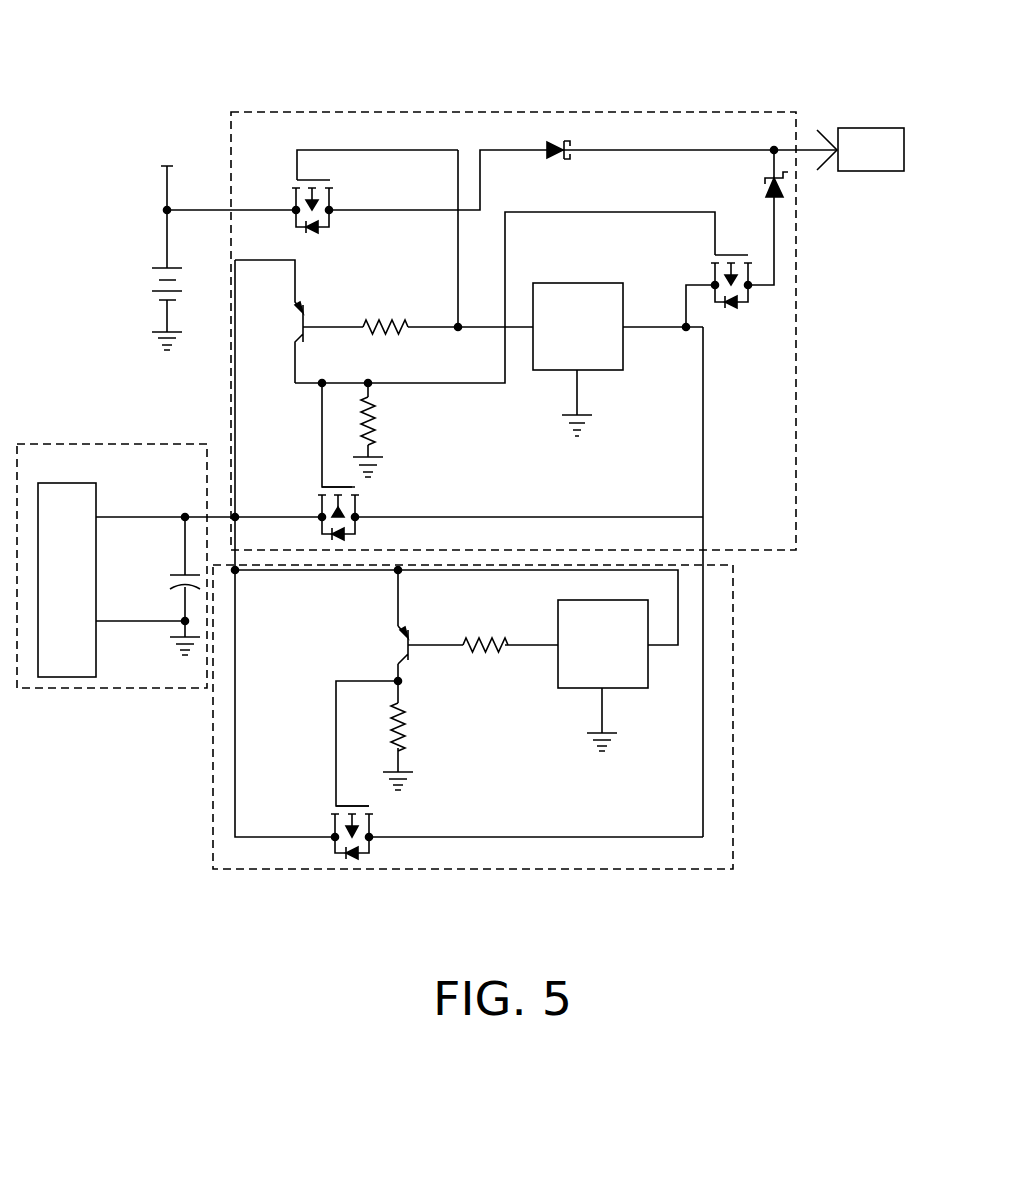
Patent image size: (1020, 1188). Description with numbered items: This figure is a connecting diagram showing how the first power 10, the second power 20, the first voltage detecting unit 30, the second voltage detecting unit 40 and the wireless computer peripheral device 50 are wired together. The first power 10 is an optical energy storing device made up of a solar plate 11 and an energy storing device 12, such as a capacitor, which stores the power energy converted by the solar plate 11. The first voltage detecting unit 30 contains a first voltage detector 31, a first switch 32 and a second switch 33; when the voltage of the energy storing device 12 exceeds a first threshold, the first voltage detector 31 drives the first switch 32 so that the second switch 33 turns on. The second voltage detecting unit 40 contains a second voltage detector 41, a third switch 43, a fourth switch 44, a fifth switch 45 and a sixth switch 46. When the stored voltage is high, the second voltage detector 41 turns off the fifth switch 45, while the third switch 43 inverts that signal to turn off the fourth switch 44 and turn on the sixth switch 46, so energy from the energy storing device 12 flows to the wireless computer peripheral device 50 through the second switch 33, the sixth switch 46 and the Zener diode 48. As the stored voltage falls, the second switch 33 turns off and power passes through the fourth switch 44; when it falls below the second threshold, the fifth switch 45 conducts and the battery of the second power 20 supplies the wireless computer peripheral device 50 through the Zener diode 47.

The first power 10 is at (107, 452).
The solar plate 11 is at (60, 497).
The energy storing device 12 is at (160, 583).
The second power 20 is at (152, 250).
The first voltage detecting unit 30 is at (728, 730).
The first voltage detector 31 is at (629, 663).
The first switch 32 is at (397, 643).
The second switch 33 is at (377, 825).
The second voltage detecting unit 40 is at (690, 115).
The second voltage detector 41 is at (608, 352).
The third switch 43 is at (298, 302).
The fourth switch 44 is at (313, 507).
The fifth switch 45 is at (340, 198).
The sixth switch 46 is at (735, 248).
The Zener diode 47 is at (552, 140).
The Zener diode 48 is at (790, 187).
The wireless computer peripheral device 50 is at (870, 135).